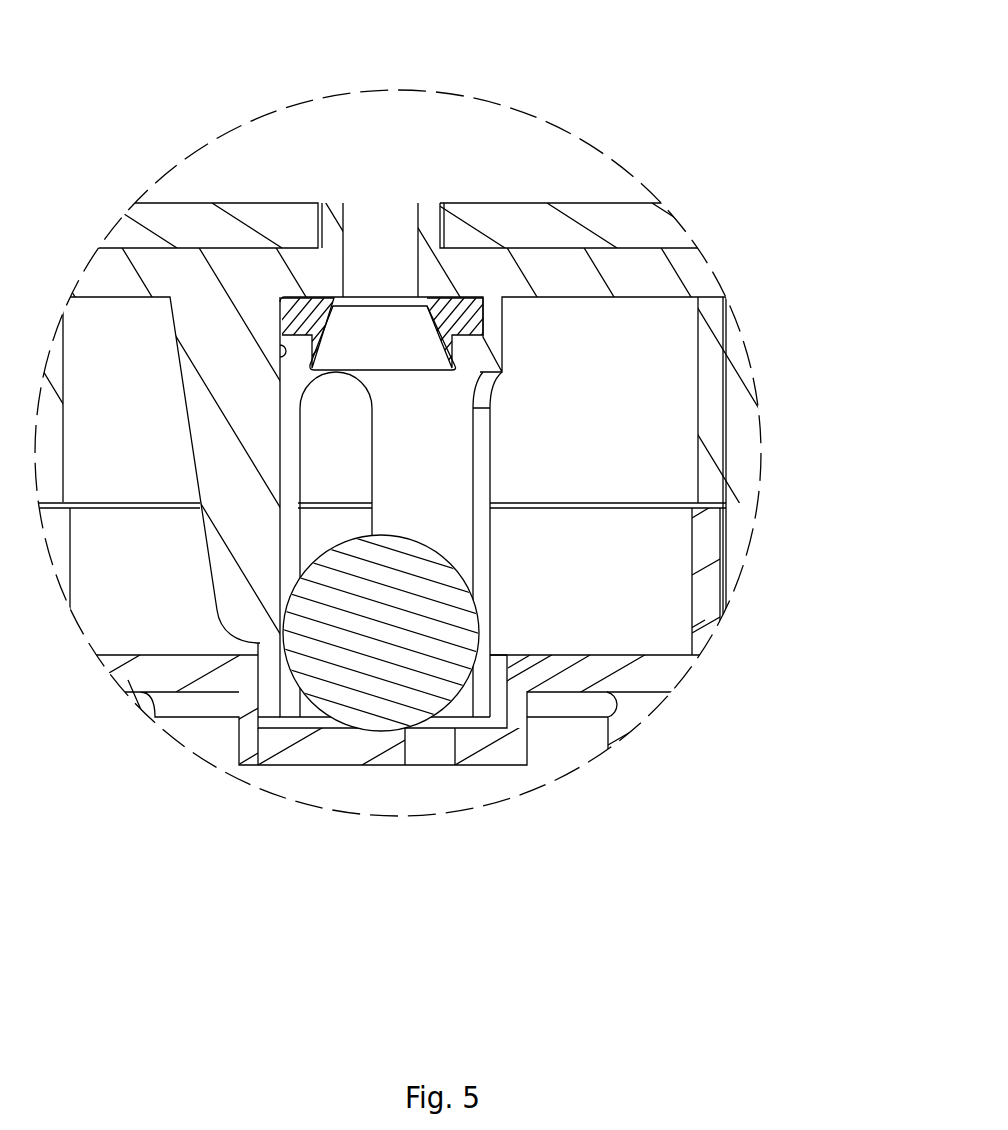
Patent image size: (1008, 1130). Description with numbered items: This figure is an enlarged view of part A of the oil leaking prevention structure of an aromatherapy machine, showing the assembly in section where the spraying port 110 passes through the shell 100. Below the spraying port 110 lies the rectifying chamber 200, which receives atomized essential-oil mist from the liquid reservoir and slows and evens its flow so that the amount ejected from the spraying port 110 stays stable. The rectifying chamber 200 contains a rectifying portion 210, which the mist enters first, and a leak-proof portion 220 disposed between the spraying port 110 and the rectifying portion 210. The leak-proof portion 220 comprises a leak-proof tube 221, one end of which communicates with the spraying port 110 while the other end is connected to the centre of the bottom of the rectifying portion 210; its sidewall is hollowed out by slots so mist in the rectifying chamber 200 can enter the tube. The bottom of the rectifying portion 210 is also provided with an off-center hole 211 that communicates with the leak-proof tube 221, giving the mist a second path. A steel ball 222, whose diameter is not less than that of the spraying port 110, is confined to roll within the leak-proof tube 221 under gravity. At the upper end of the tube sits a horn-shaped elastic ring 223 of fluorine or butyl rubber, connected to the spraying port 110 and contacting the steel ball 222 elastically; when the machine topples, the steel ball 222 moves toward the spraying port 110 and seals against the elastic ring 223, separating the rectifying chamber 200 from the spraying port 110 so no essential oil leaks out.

The shell 100 is at (520, 222).
The spraying port 110 is at (382, 235).
The rectifying chamber 200 is at (643, 360).
The rectifying portion 210 is at (163, 662).
The hole 211 is at (427, 747).
The leak-proof portion 220 is at (873, 605).
The leak-proof tube 221 is at (428, 507).
The steel ball 222 is at (425, 657).
The elastic ring 223 is at (395, 340).
The part A is at (597, 172).